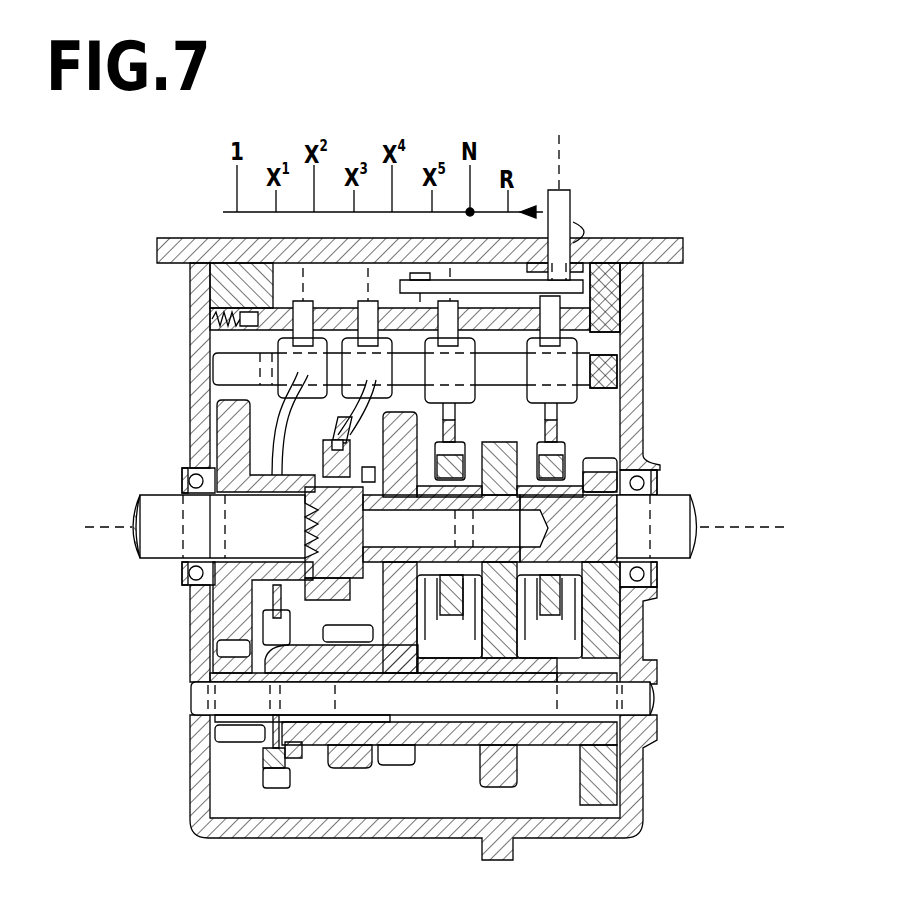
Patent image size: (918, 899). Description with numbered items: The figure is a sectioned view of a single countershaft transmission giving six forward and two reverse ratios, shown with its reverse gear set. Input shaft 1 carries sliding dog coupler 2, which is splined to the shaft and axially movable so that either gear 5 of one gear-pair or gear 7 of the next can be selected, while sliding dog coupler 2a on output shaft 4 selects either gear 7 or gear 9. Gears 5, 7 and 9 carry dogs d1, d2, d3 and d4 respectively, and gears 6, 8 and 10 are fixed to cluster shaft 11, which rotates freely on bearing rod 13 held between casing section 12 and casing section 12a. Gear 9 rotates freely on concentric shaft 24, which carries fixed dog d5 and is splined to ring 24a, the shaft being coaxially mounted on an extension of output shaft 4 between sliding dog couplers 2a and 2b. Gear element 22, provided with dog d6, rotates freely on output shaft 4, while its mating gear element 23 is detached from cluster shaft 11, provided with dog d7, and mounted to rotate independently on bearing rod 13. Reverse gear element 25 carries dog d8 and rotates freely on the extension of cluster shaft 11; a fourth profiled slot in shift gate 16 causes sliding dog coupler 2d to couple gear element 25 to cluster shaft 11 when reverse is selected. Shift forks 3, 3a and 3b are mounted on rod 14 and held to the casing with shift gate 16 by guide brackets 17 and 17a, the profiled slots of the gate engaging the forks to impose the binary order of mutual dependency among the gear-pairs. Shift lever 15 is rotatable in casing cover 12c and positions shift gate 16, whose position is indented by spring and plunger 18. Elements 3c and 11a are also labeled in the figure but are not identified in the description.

The input shaft 1 is at (663, 517).
The sliding dog coupler 2 is at (462, 588).
The sliding dog coupler 2a is at (540, 597).
The sliding dog coupler 2b is at (313, 598).
The sliding dog coupler 2d is at (262, 750).
The shift fork 3 is at (550, 363).
The shift fork 3a is at (445, 432).
The third shift fork 3b is at (290, 397).
The bearing block 3c is at (278, 443).
The output shaft 4 is at (238, 551).
The gear 5 is at (600, 467).
The gear 6 is at (598, 767).
The gear 7 is at (503, 448).
The gear 8 is at (497, 763).
The gear 9 is at (383, 606).
The gear 10 is at (392, 762).
The cluster shaft 11 is at (447, 737).
The plate portion 11a is at (228, 732).
The casing section 12 is at (632, 740).
The casing section 12a is at (213, 827).
The casing cover 12c is at (185, 247).
The bearing rod 13 is at (630, 705).
The rod 14 is at (603, 373).
The shift lever 15 is at (562, 202).
The shift gate 16 is at (593, 327).
The guide bracket 17 is at (607, 303).
The guide bracket 17a is at (243, 337).
The spring and plunger 18 is at (210, 320).
The gear element 22 is at (228, 655).
The gear element 23 is at (222, 720).
The concentric shaft 24 is at (240, 548).
The ring 24a is at (320, 504).
The reverse gear element 25 is at (340, 768).
The dog d1 is at (558, 603).
The dog d2 is at (528, 603).
The dog d3 is at (468, 600).
The dog d4 is at (428, 620).
The fixed dog d5 is at (368, 467).
The dog d6 is at (323, 475).
The dog d7 is at (310, 760).
The dog d8 is at (273, 752).